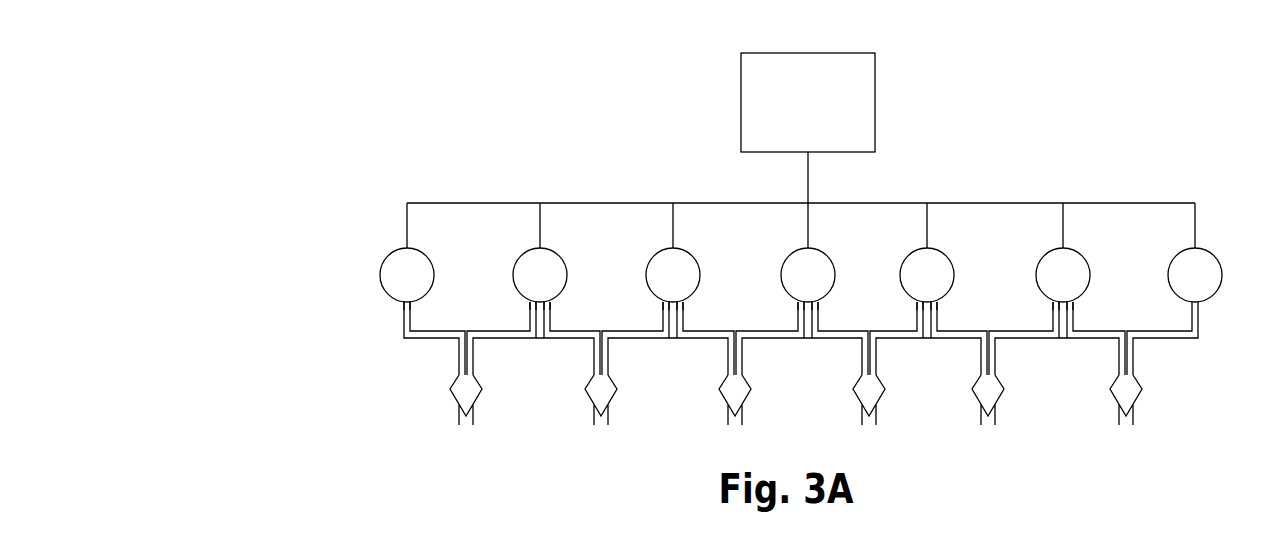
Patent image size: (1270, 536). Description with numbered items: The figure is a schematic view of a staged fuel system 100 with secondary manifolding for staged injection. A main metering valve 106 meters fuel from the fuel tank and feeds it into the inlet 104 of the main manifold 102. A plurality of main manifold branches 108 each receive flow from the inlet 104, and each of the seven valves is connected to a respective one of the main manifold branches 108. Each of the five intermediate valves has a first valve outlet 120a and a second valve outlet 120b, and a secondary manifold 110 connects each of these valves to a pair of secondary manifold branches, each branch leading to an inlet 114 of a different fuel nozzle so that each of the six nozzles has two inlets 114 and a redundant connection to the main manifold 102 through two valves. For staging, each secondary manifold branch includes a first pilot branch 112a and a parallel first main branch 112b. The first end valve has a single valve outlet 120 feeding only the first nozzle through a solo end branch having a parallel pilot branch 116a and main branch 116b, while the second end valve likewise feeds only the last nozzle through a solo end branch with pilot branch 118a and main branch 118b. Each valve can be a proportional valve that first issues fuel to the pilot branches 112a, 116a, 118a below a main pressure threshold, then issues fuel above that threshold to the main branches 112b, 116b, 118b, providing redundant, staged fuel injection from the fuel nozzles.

The fuel system 100 is at (423, 22).
The main manifold 102 is at (590, 201).
The inlet 104 is at (809, 170).
The main metering valve 106 is at (876, 96).
The main manifold branches 108 is at (407, 211).
The secondary manifold 110 is at (540, 341).
The first pilot branch 112a is at (512, 330).
The first main branch 112b is at (497, 339).
The inlets 114 is at (452, 363).
The pilot branch 116a is at (402, 326).
The main branch 116b is at (412, 327).
The pilot branch 118a is at (1158, 329).
The main branch 118b is at (1166, 339).
The valve outlet 120 is at (398, 308).
The first valve outlet 120a is at (527, 306).
The second valve outlet 120b is at (554, 306).